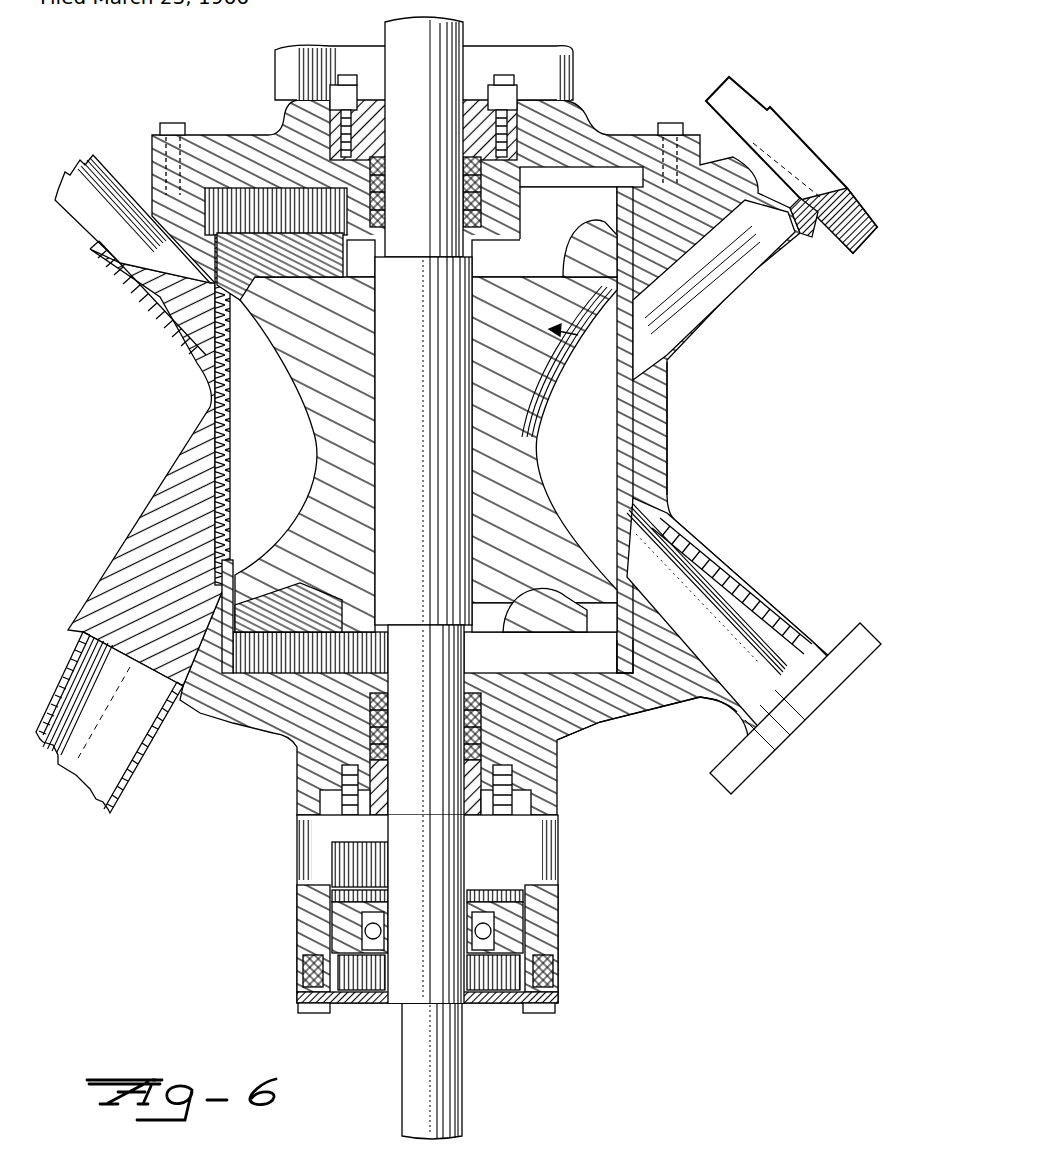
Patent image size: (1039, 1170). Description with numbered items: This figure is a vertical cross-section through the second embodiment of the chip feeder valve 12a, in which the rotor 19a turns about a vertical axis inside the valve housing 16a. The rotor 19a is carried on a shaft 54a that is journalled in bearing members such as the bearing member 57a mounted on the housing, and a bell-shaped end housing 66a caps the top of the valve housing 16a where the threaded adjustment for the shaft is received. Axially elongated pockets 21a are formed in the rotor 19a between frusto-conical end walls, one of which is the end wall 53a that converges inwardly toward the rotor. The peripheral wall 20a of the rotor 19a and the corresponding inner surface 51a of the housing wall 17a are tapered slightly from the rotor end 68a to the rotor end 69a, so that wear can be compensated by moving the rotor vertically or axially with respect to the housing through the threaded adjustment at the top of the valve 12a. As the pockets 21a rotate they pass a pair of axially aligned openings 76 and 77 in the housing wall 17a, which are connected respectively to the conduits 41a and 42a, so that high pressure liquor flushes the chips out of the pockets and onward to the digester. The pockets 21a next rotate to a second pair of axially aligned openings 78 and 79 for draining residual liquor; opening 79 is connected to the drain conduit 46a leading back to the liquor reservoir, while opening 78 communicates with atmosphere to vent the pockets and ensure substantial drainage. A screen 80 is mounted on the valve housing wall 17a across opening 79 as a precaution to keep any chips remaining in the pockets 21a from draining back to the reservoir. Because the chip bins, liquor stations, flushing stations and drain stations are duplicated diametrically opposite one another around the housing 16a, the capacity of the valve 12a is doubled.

The chip feeder valve 12a is at (678, 483).
The valve housing 16a is at (632, 719).
The valve housing wall 17a is at (667, 397).
The rotor 19a is at (670, 358).
The peripheral wall 20a is at (617, 435).
The pockets 21a is at (310, 462).
The conduit 41a is at (747, 589).
The conduit 42a is at (754, 278).
The conduit 46a is at (131, 784).
The inner surface 51a is at (618, 405).
The end wall 53a is at (298, 308).
The shaft 54a is at (443, 37).
The bearing member 57a is at (500, 928).
The bell-shaped end housing 66a is at (575, 68).
The rotor end 68a is at (544, 232).
The rotor end 69a is at (594, 638).
The opening 76 is at (632, 292).
The opening 77 is at (627, 580).
The opening 78 is at (203, 287).
The opening 79 is at (225, 580).
The screen 80 is at (230, 470).